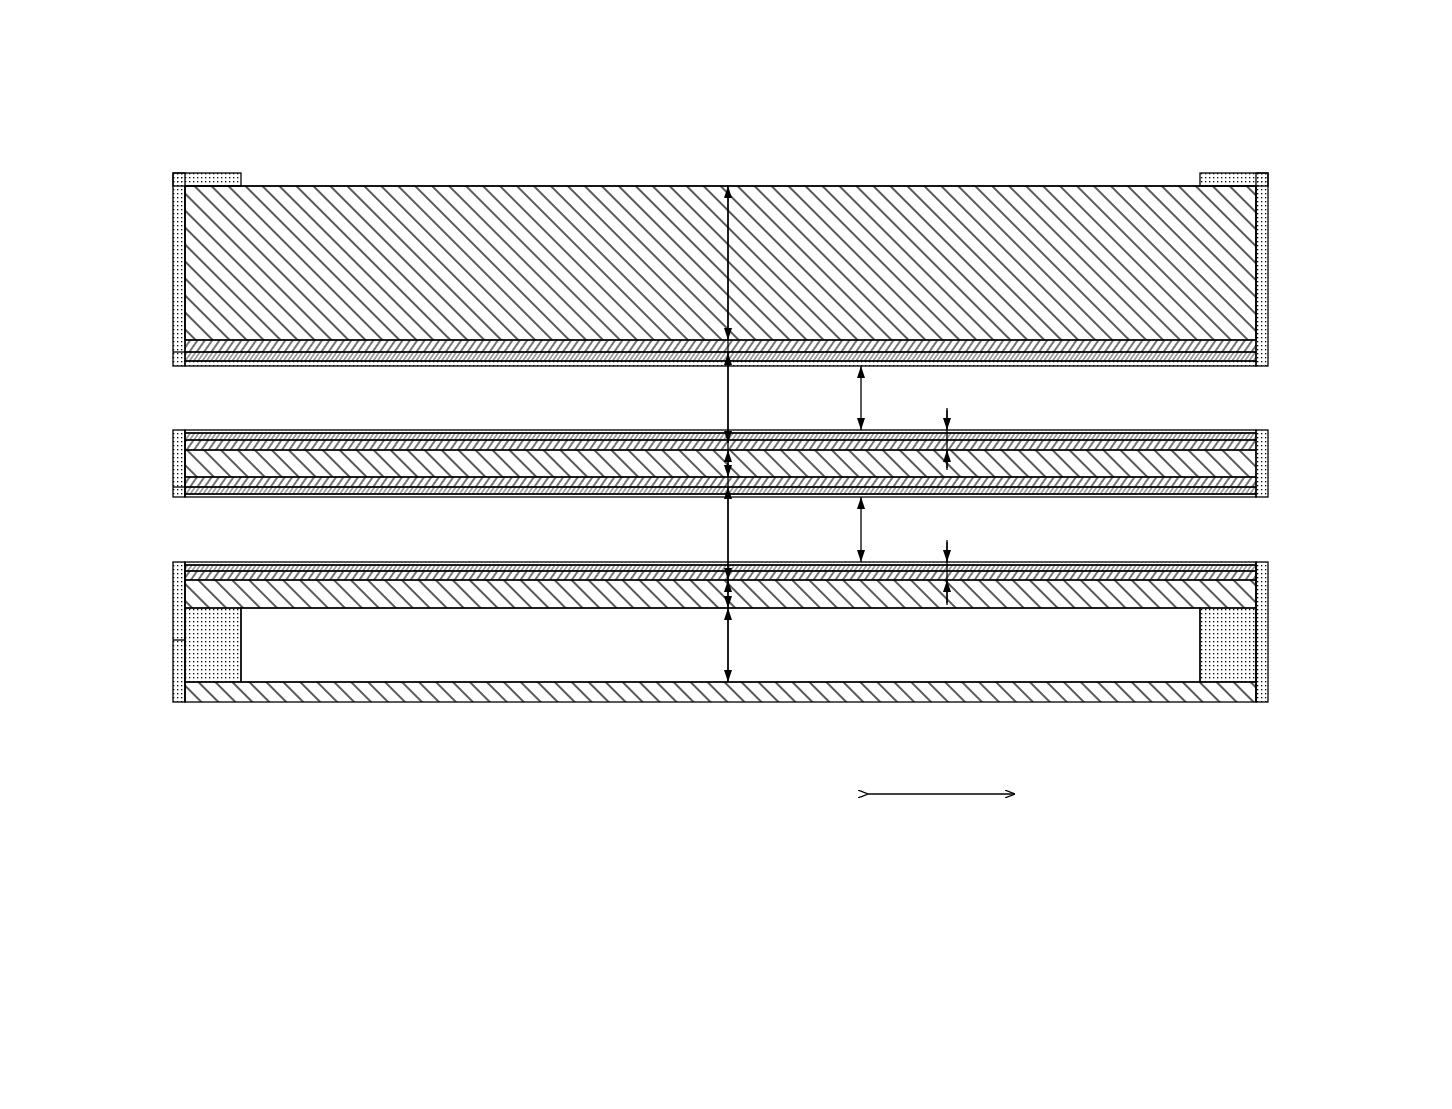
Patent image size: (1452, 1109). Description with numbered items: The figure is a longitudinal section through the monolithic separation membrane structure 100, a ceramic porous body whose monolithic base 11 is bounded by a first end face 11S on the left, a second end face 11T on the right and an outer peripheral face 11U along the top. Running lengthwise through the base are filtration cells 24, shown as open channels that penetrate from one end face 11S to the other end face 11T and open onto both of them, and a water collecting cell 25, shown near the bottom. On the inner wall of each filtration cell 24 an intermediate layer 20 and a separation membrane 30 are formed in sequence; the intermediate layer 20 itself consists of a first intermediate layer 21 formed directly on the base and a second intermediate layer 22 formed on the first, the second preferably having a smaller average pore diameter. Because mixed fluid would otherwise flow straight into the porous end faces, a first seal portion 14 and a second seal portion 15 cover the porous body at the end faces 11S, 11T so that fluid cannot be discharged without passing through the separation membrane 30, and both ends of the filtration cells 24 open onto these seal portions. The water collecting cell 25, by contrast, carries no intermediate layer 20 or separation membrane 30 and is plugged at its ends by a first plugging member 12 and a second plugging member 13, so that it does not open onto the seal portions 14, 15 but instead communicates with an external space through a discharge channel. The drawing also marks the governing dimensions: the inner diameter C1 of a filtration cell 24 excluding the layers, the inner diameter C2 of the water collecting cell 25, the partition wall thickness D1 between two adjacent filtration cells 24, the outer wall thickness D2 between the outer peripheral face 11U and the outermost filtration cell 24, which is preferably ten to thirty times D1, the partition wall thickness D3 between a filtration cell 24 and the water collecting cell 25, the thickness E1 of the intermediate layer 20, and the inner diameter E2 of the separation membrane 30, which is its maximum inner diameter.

The monolithic separation membrane structure 100 is at (1270, 152).
The monolithic base 11 is at (195, 322).
The outer peripheral face 11U is at (378, 186).
The first end face 11S is at (185, 300).
The second end face 11T is at (1258, 297).
The first plugging member 12 is at (224, 667).
The second plugging member 13 is at (1231, 667).
The first seal portion 14 is at (178, 356).
The second seal portion 15 is at (1268, 322).
The intermediate layer 20 is at (1388, 428).
The first intermediate layer 21 is at (1268, 347).
The second intermediate layer 22 is at (1268, 361).
The filtration cells 24 is at (385, 345).
The water collecting cells 25 is at (383, 608).
The separation membrane 30 is at (1178, 366).
The inner diameter of filtration cell C1 is at (726, 420).
The inner diameter of water collecting cell C2 is at (726, 652).
The partition wall thickness D1 is at (733, 466).
The outer wall thickness D2 is at (722, 206).
The partition wall thickness D3 is at (733, 592).
The thickness of intermediate layer E1 is at (951, 426).
The inner diameter of separation membrane E2 is at (865, 404).